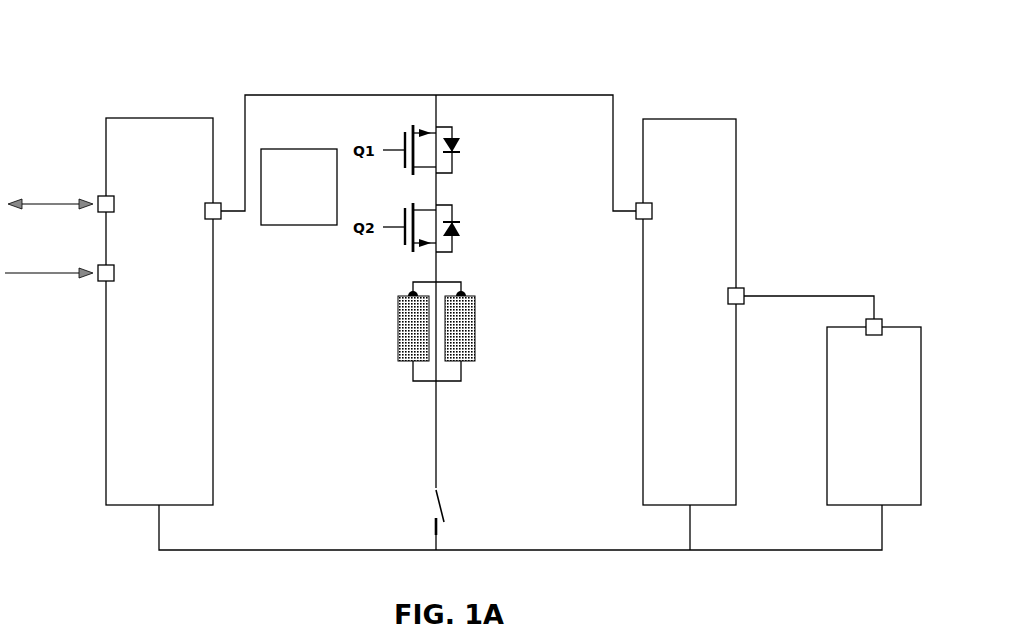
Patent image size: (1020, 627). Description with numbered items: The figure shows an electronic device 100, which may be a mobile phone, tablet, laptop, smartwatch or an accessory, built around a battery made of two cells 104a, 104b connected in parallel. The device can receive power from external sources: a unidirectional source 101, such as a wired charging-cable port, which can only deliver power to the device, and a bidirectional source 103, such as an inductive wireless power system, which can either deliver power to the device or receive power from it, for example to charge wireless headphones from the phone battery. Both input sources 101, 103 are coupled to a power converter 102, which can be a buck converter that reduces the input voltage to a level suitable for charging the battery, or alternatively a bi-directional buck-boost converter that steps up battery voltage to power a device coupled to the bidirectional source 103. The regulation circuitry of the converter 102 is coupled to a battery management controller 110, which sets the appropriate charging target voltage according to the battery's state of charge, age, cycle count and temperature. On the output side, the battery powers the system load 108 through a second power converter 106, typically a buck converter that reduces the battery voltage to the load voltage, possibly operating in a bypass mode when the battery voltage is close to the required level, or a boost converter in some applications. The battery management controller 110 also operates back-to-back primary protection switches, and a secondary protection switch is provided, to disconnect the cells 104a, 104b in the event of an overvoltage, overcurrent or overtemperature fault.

The electronic device 100 is at (194, 62).
The unidirectional external power source 101 is at (49, 259).
The power converter 102 is at (127, 117).
The bidirectional external power source 103 is at (50, 190).
The battery cell 104a is at (396, 296).
The battery cell 104b is at (473, 296).
The power converter 106 is at (722, 118).
The system load 108 is at (822, 359).
The battery management controller 110 is at (328, 147).